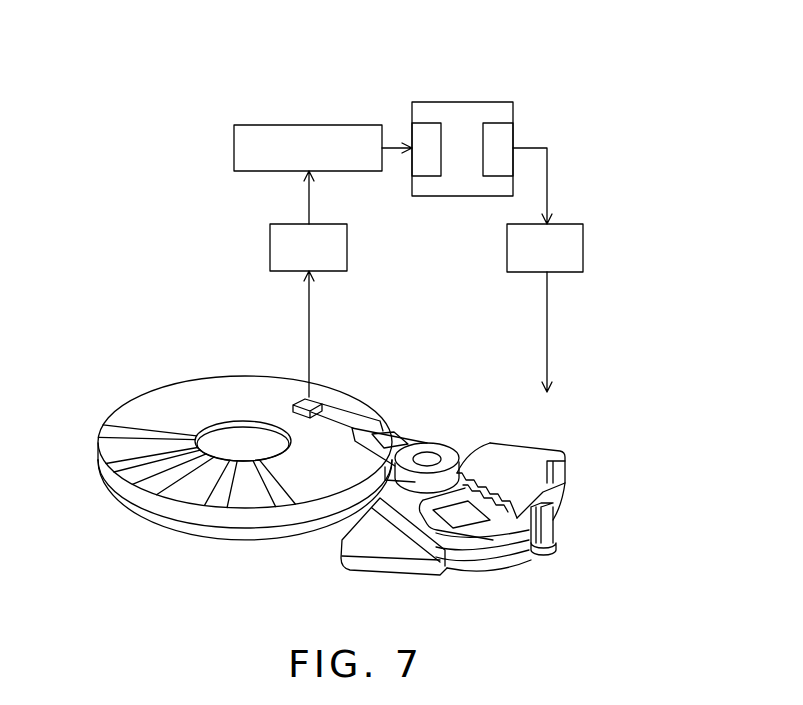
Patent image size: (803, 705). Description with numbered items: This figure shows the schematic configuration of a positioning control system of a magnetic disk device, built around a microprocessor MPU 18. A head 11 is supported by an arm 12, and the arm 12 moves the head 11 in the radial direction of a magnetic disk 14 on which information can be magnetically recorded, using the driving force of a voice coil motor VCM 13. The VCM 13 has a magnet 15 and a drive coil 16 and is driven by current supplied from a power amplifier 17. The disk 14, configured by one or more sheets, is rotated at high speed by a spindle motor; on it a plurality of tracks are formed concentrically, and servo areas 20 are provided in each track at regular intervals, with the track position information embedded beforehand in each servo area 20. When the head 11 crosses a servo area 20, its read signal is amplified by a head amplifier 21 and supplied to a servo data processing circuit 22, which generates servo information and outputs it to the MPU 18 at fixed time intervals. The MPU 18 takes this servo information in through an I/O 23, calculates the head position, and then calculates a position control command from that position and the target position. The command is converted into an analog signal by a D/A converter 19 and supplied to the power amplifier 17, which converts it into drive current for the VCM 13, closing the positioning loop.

The head 11 is at (296, 403).
The arm 12 is at (408, 433).
The voice coil motor 13 is at (518, 467).
The magnetic disk 14 is at (160, 508).
The magnet 15 is at (492, 510).
The drive coil 16 is at (463, 550).
The power amplifier 17 is at (583, 247).
The microprocessor 18 is at (465, 102).
The D/A converter 19 is at (498, 128).
The servo area 20 is at (130, 432).
The head amplifier 21 is at (270, 250).
The servo data processing circuit 22 is at (312, 125).
The I/O 23 is at (428, 128).